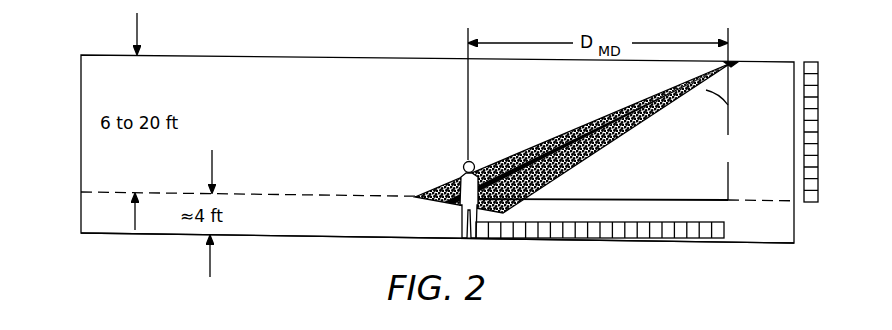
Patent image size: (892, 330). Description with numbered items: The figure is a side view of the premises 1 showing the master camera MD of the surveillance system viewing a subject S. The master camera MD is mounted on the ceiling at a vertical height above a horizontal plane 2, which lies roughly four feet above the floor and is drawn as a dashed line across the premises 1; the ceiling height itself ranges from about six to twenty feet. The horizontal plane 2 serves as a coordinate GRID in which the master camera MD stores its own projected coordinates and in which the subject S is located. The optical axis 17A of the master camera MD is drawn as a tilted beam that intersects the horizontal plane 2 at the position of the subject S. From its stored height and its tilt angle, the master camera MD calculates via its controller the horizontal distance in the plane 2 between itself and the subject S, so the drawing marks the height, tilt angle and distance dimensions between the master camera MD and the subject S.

The premises 1 is at (352, 238).
The horizontal plane 2 is at (98, 192).
The optical axis 17A is at (557, 145).
The subject S is at (462, 161).
The master camera MD is at (733, 62).
The grid GRID is at (352, 196).